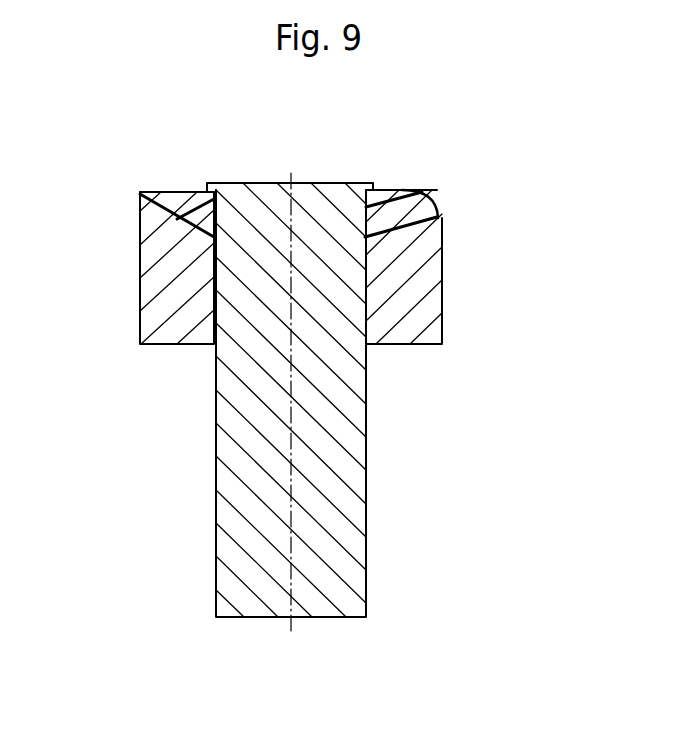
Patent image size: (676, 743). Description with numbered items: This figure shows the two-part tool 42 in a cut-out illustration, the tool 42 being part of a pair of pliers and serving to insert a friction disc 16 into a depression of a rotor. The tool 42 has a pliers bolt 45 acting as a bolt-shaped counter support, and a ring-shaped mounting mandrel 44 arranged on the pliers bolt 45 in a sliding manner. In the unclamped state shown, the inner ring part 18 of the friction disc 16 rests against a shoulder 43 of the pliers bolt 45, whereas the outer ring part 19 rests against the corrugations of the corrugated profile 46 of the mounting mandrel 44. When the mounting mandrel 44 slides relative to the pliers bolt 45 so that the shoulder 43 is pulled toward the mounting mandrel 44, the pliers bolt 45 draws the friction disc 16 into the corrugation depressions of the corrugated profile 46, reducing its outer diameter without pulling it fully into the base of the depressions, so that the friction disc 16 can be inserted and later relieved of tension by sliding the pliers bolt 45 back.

The friction disc 16 is at (188, 190).
The outer ring part 19 is at (149, 190).
The shoulder 43 is at (373, 187).
The inner ring part 18 is at (214, 199).
The corrugated profile 46 is at (413, 215).
The mounting mandrel 44 is at (448, 325).
The tool 42 is at (438, 412).
The pliers bolt 45 is at (373, 513).